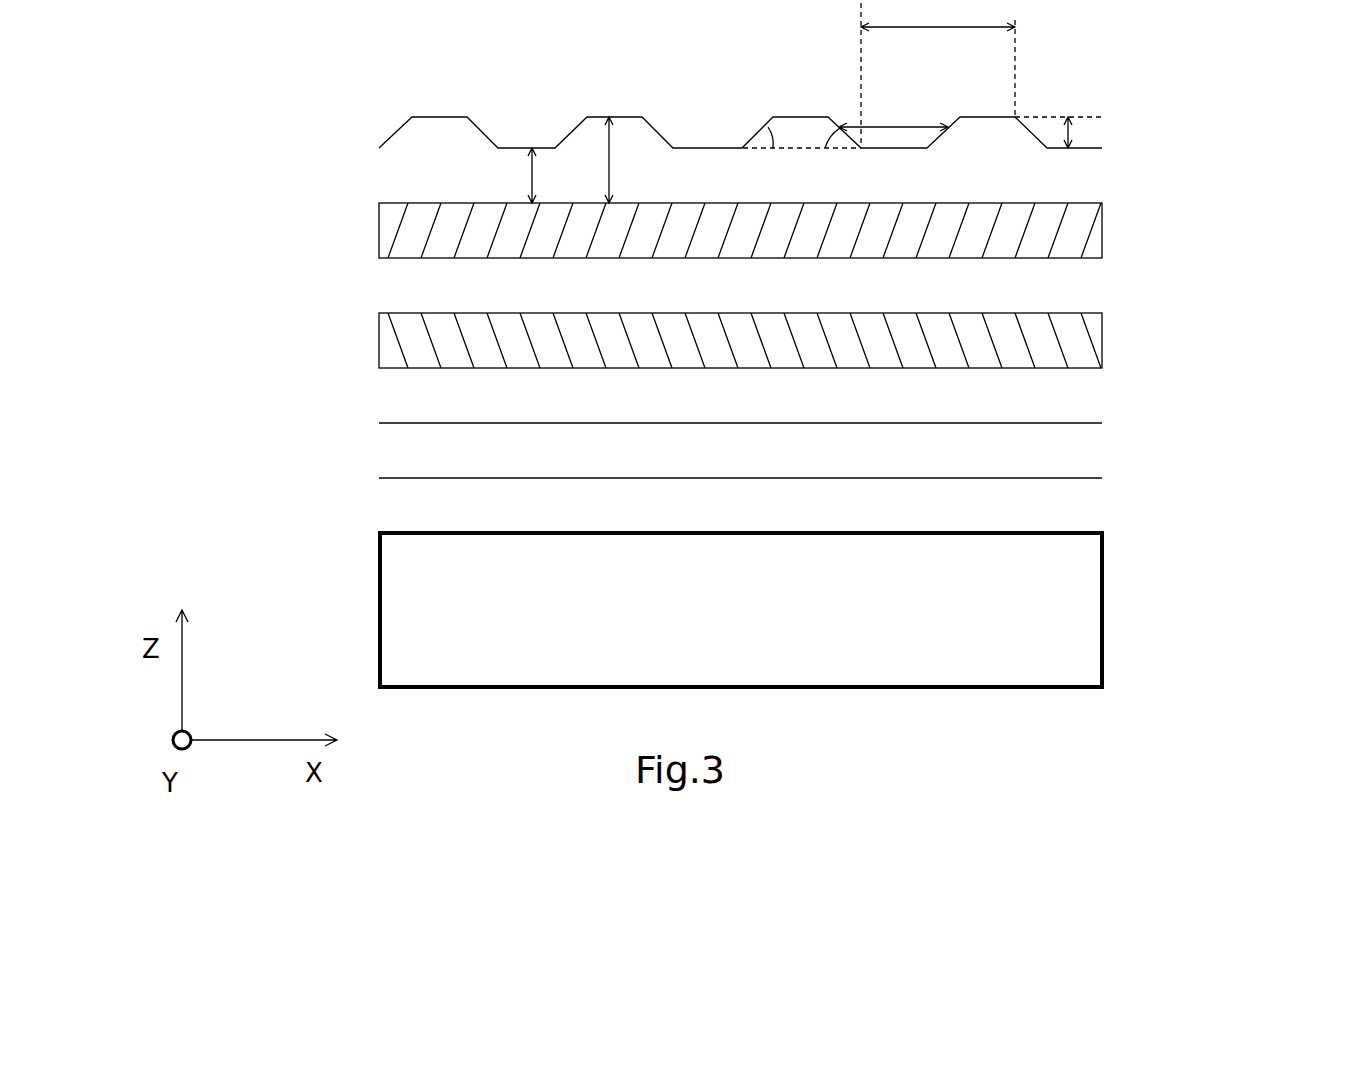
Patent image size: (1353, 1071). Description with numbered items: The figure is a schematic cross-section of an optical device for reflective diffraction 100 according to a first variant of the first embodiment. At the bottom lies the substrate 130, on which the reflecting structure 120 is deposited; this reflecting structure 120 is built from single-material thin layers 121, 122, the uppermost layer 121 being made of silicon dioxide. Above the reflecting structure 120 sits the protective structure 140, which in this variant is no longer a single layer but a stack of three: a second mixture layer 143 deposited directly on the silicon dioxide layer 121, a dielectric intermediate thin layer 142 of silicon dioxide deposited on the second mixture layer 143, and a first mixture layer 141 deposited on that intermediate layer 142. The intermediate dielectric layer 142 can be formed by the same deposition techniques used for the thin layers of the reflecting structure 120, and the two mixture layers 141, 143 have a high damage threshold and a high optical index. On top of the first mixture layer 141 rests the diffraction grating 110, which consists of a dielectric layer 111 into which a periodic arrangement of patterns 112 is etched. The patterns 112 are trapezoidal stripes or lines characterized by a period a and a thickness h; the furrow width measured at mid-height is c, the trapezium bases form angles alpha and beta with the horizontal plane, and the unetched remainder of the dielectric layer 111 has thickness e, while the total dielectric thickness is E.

The optical device for reflective diffraction 100 is at (1112, 750).
The diffraction grating 110 is at (1125, 148).
The dielectric layer 111 is at (410, 163).
The periodic arrangement of patterns 112 is at (995, 125).
The reflecting structure 120 is at (1145, 393).
The single-material thin layer (SiO2) 121 is at (388, 392).
The single-material thin layer 122 is at (378, 447).
The substrate 130 is at (1090, 602).
The protective structure 140 is at (1157, 202).
The first mixture layer 141 is at (388, 227).
The dielectric intermediate thin layer 142 is at (388, 282).
The second mixture layer 143 is at (388, 337).